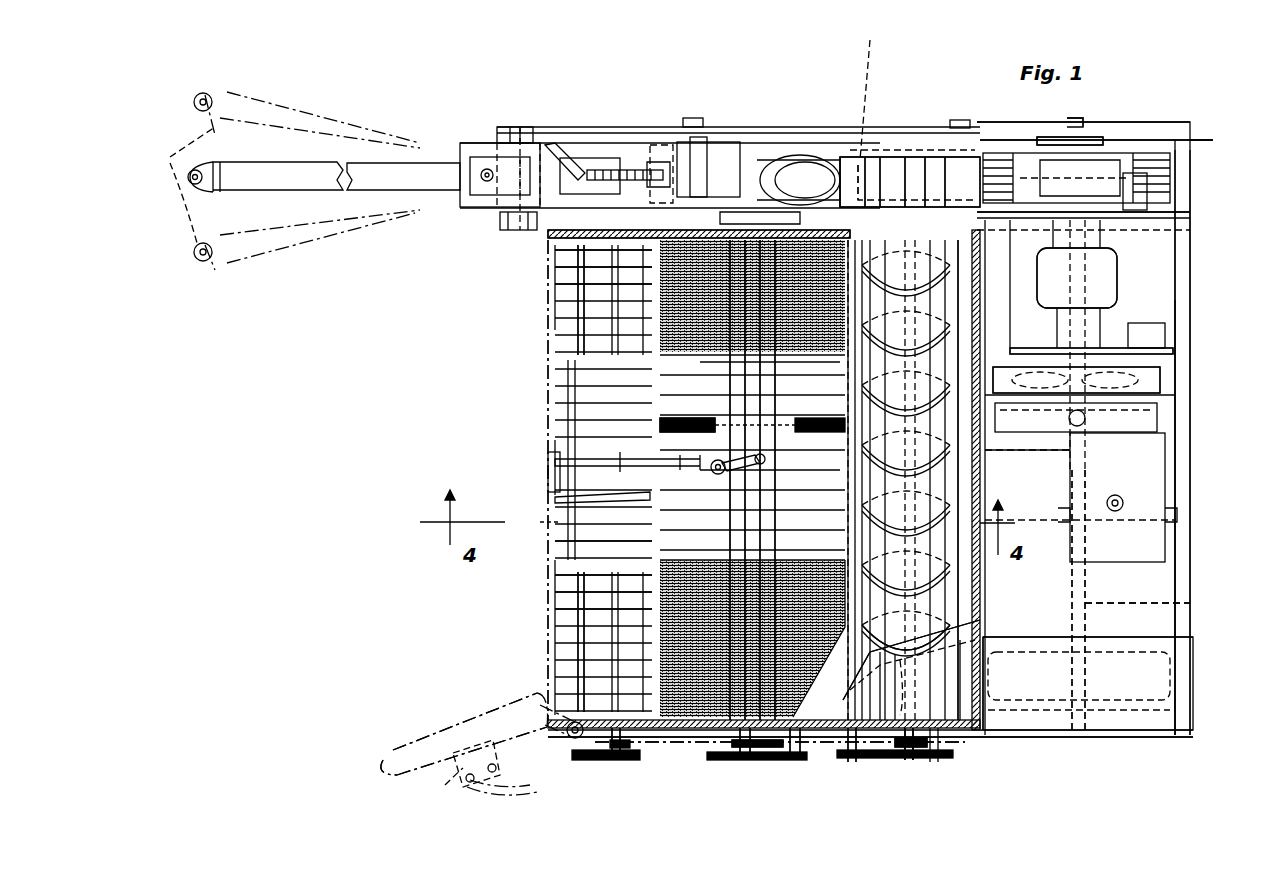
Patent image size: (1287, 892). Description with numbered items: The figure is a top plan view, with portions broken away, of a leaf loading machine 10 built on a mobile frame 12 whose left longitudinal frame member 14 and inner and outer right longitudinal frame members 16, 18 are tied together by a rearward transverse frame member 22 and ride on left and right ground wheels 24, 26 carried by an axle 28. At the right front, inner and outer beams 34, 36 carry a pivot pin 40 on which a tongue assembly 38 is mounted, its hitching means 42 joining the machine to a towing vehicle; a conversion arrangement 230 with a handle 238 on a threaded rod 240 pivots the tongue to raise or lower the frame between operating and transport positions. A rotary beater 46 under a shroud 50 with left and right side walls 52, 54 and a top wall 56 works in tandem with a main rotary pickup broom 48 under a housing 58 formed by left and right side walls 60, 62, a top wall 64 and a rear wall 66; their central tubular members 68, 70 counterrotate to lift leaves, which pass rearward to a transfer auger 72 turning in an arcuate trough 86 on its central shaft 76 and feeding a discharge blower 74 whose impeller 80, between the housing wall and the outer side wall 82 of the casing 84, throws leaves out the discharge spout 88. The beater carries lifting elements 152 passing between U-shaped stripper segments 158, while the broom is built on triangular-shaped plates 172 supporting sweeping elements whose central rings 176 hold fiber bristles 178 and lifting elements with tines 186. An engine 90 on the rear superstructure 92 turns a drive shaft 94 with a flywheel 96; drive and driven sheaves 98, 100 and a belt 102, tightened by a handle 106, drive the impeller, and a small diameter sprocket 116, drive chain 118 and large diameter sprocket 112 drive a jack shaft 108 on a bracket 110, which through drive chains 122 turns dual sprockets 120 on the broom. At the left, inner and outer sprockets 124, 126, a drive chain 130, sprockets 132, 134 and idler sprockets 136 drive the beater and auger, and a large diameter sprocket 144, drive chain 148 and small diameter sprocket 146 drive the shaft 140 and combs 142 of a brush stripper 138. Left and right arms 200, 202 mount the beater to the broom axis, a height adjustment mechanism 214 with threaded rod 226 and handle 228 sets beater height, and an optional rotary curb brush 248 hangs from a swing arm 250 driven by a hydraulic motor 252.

The leaf loading machine 10 is at (1180, 82).
The mobile frame 12 is at (1198, 252).
The left longitudinal frame member 14 is at (1110, 737).
The inner right longitudinal frame member 16 is at (1160, 222).
The outer right longitudinal frame member 18 is at (925, 155).
The rearward transverse frame member 22 is at (1190, 450).
The left ground wheel 24 is at (1165, 678).
The right ground wheel 26 is at (1168, 175).
The axle 28 is at (1190, 603).
The inner beam 34 is at (500, 210).
The outer beam 36 is at (500, 130).
The tongue assembly 38 is at (455, 205).
The pivot pin 40 is at (510, 127).
The hitching means 42 is at (281, 181).
The rotary beater 46 is at (548, 560).
The main rotary pickup broom 48 is at (745, 760).
The shroud 50 is at (545, 470).
The left side wall 52 is at (550, 700).
The right side wall 54 is at (550, 245).
The top wall 56 is at (555, 470).
The housing 58 is at (990, 468).
The left side wall 60 is at (690, 710).
The right side wall 62 is at (860, 160).
The top wall 64 is at (990, 445).
The rear wall 66 is at (1070, 470).
The central tubular member 68 is at (580, 545).
The central tubular member 70 is at (847, 500).
The transfer auger 72 is at (950, 605).
The discharge blower 74 is at (905, 150).
The central shaft 76 is at (940, 760).
The impeller 80 is at (870, 50).
The outer side wall 82 is at (920, 150).
The casing 84 is at (930, 155).
The trough 86 is at (960, 578).
The discharge spout 88 is at (775, 160).
The engine 90 is at (1130, 288).
The rear superstructure 92 is at (1170, 570).
The drive shaft 94 is at (1072, 118).
The flywheel 96 is at (1135, 170).
The drive sheave 98 is at (1090, 137).
The driven sheave 100 is at (925, 130).
The belt 102 is at (990, 138).
The handle 106 is at (1205, 140).
The jack shaft 108 is at (690, 150).
The bracket 110 is at (700, 140).
The large diameter sprocket 112 is at (650, 127).
The small diameter sprocket 116 is at (878, 157).
The drive chain 118 is at (835, 165).
The dual sprockets 120 is at (820, 160).
The drive chains 122 is at (750, 210).
The inner sprocket 124 is at (770, 748).
The outer sprocket 126 is at (760, 762).
The drive chain 130 is at (615, 762).
The sprocket 132 is at (572, 760).
The sprocket 134 is at (935, 758).
The idler sprockets 136 is at (760, 760).
The brush stripper 138 is at (960, 635).
The shaft 140 is at (850, 750).
The combs 142 is at (850, 378).
The large diameter sprocket 144 is at (860, 762).
The small diameter sprocket 146 is at (940, 756).
The drive chain 148 is at (880, 760).
The lifting elements 152 is at (560, 355).
The stripper segments 158 is at (580, 328).
The triangular-shaped plates 172 is at (960, 322).
The central ring 176 is at (700, 432).
The fiber bristles 178 is at (695, 330).
The tines 186 is at (745, 380).
The left arm 200 is at (655, 762).
The right arm 202 is at (555, 125).
The height adjustment mechanism 214 is at (560, 500).
The threaded rod 226 is at (625, 452).
The handle 228 is at (765, 460).
The conversion arrangement 230 is at (565, 145).
The handle 238 is at (575, 157).
The threaded rod 240 is at (605, 170).
The rotary curb brush 248 is at (380, 742).
The swing arm 250 is at (495, 760).
The hydraulic motor 252 is at (450, 785).